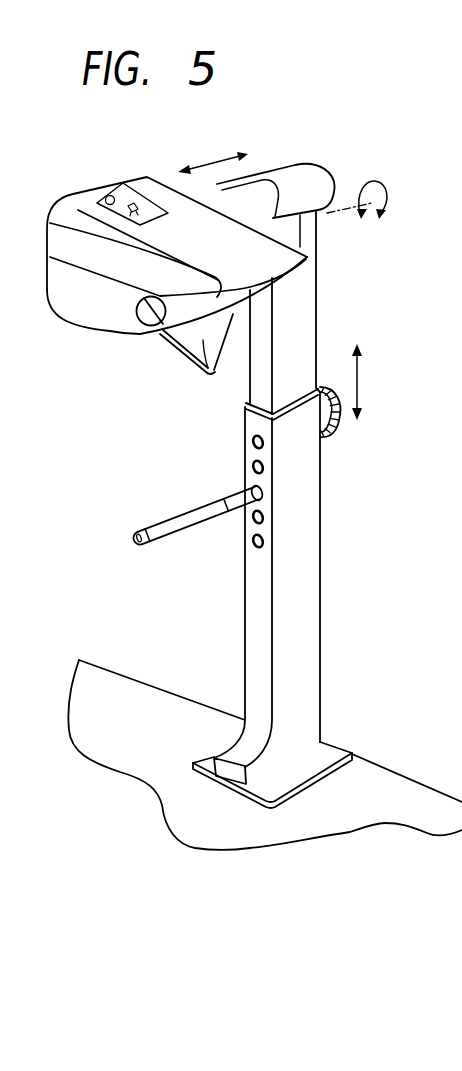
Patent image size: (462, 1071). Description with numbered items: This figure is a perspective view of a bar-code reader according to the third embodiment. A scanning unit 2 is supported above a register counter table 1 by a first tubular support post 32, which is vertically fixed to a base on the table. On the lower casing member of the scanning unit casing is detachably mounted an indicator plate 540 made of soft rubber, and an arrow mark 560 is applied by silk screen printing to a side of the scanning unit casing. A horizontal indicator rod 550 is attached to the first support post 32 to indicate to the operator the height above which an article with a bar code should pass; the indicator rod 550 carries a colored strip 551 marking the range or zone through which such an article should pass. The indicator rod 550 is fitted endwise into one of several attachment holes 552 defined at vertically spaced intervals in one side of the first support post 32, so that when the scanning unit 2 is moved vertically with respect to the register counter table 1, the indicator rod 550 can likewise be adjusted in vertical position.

The register counter table 1 is at (164, 703).
The scanning unit 2 is at (124, 172).
The first tubular support post 32 is at (313, 520).
The indicator plate 540 is at (204, 352).
The indicator rod 550 is at (168, 542).
The colored strip 551 is at (177, 522).
The attachment holes 552 is at (254, 444).
The arrow mark 560 is at (138, 324).